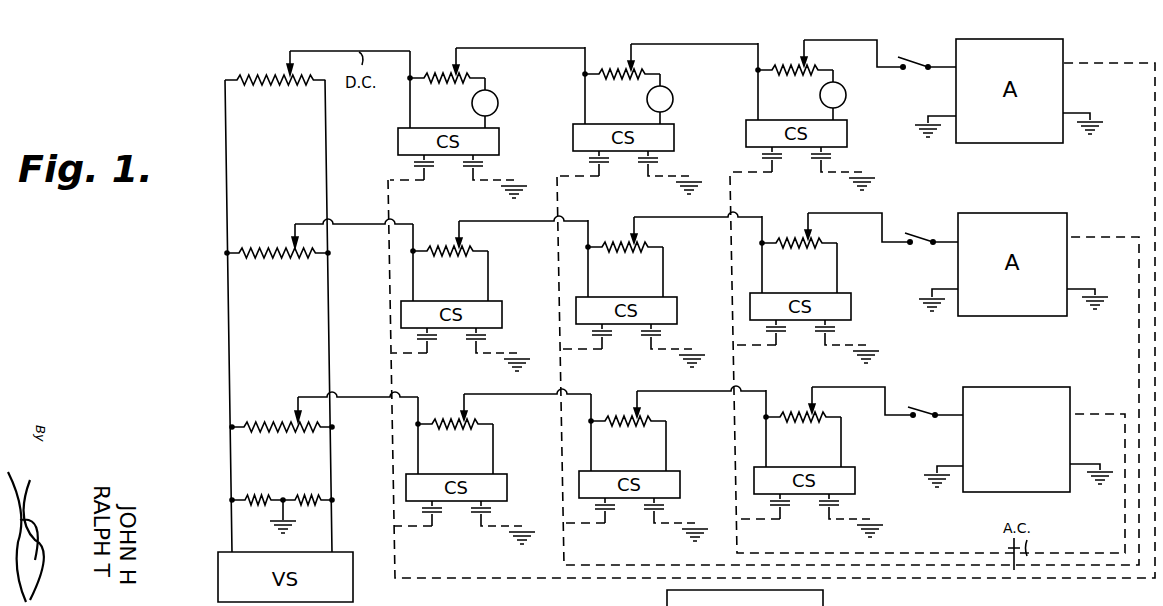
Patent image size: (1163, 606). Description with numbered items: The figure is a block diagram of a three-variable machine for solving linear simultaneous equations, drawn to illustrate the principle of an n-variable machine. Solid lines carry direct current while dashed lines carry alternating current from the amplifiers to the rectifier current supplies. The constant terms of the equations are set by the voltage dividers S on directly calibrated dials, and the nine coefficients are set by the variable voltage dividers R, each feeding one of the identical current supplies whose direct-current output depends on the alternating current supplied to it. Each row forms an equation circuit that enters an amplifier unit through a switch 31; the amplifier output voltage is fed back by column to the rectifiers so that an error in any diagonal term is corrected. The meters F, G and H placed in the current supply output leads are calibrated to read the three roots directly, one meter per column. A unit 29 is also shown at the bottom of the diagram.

The switch 31 is at (916, 56).
The control unit 29 is at (667, 590).
The voltage divider S is at (288, 57).
The variable voltage divider R is at (456, 57).
The meter F is at (496, 95).
The meter G is at (672, 92).
The meter H is at (852, 86).